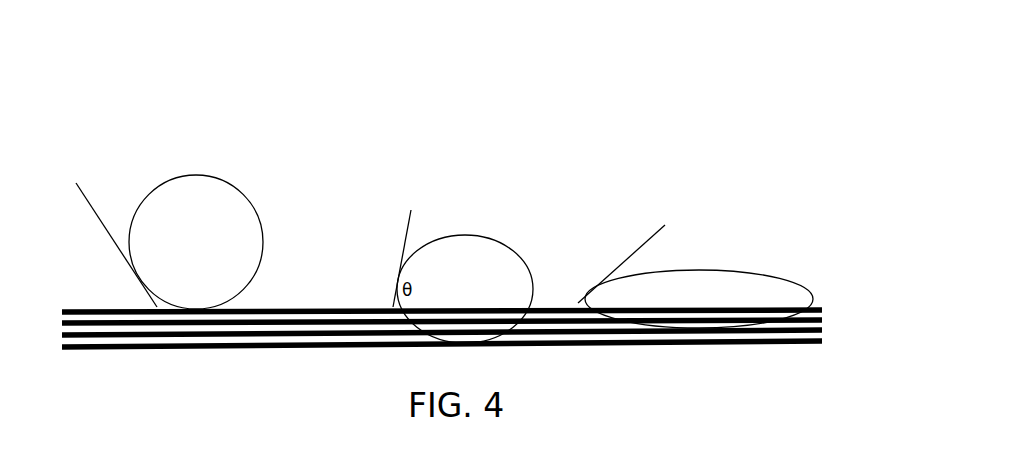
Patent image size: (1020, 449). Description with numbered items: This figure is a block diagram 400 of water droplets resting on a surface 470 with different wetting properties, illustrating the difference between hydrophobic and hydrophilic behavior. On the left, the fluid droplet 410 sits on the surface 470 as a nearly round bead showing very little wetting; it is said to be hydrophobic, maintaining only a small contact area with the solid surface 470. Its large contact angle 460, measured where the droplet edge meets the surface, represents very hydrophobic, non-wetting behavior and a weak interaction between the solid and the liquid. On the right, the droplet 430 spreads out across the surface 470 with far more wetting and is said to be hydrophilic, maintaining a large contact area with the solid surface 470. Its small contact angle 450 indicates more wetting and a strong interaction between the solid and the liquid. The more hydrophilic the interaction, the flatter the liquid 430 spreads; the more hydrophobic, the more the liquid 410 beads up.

The contact angle illustration 400 is at (500, 90).
The fluid droplet 410 is at (233, 182).
The droplet 430 is at (797, 282).
The contact angle 450 is at (630, 290).
The contact angle 460 is at (172, 282).
The surface 470 is at (822, 341).